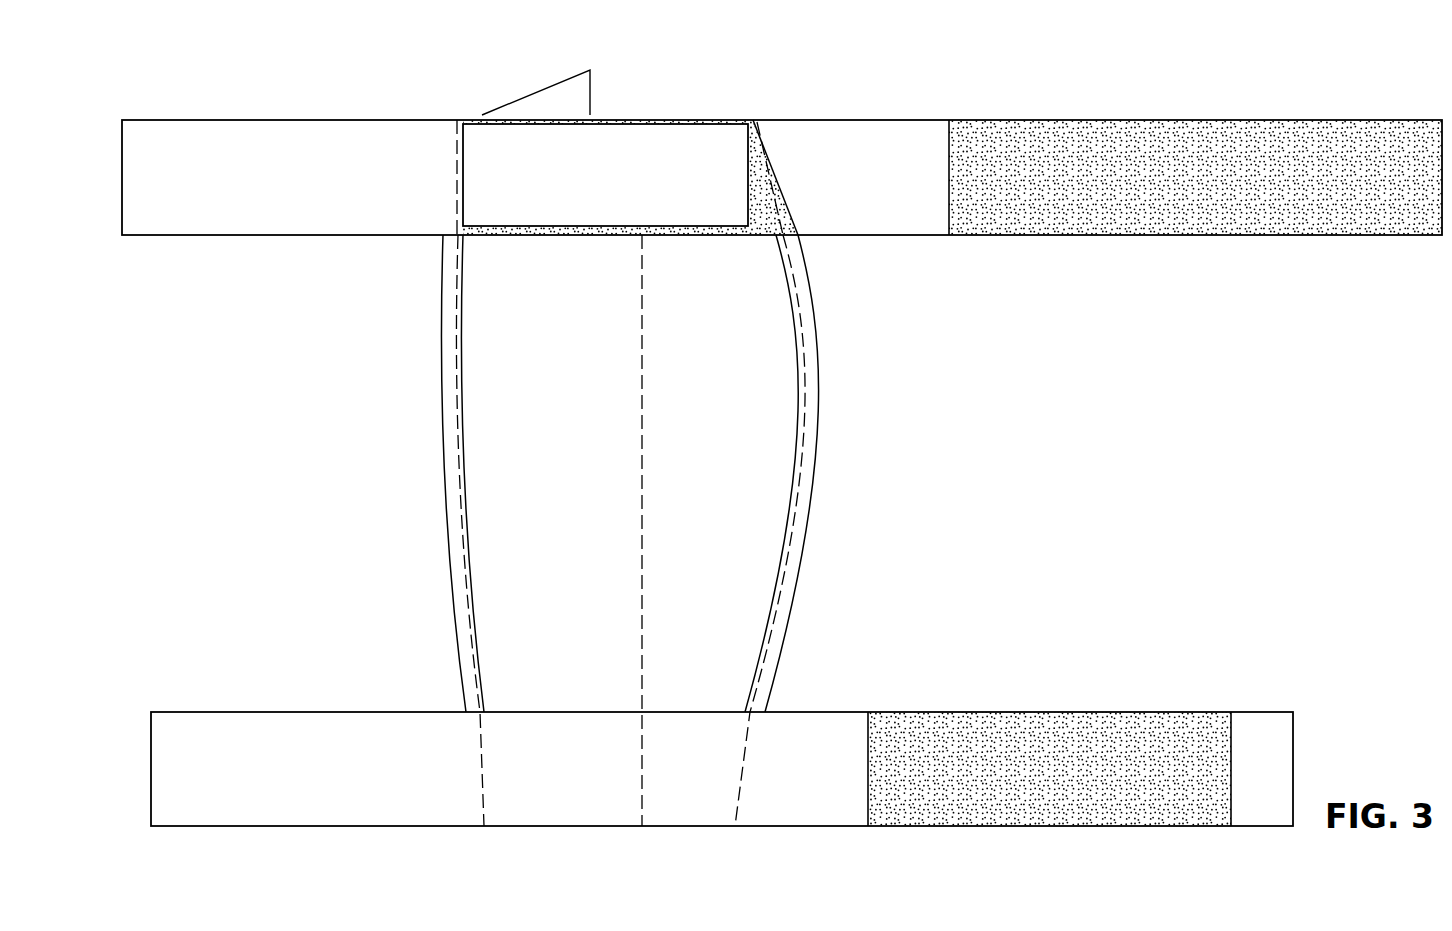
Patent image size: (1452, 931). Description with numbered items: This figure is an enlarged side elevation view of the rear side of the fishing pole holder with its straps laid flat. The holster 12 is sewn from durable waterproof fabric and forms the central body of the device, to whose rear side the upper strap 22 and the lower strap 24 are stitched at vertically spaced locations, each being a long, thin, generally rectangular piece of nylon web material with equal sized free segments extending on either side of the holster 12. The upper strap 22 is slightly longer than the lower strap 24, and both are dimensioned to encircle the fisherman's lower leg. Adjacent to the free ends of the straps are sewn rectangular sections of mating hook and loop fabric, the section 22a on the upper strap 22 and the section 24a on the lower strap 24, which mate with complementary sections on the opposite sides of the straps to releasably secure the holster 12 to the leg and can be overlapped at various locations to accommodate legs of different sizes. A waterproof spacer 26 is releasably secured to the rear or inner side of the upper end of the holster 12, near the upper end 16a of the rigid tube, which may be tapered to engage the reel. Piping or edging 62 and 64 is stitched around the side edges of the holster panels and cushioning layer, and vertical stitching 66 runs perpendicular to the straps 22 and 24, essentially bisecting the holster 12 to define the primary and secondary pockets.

The holster 12 is at (650, 473).
The upper end of the tube 16a is at (545, 89).
The upper strap 22 is at (264, 119).
The hook and loop fabric section 22a is at (1138, 133).
The lower strap 24 is at (285, 711).
The hook and loop fabric section 24a is at (1061, 728).
The waterproof spacer 26 is at (588, 190).
The piping or edging 62 is at (449, 473).
The piping or edging 64 is at (816, 356).
The vertical stitching 66 is at (642, 433).